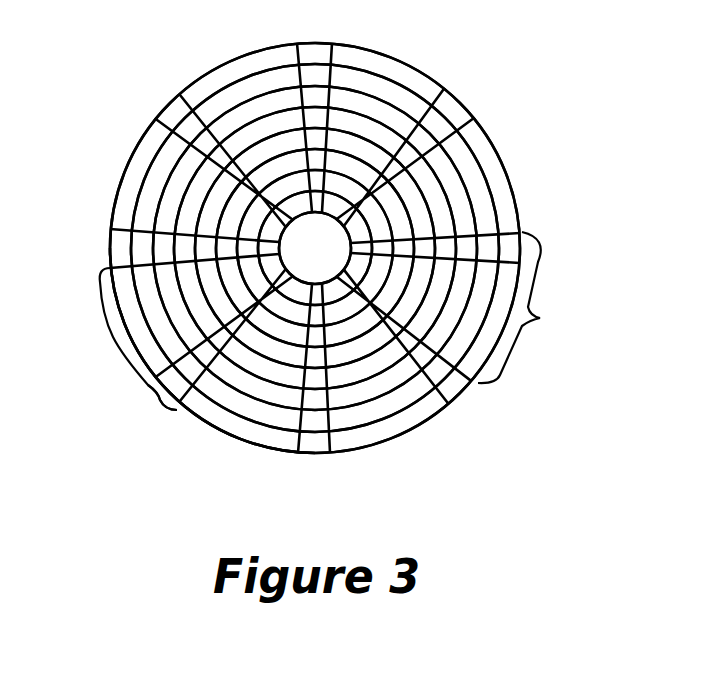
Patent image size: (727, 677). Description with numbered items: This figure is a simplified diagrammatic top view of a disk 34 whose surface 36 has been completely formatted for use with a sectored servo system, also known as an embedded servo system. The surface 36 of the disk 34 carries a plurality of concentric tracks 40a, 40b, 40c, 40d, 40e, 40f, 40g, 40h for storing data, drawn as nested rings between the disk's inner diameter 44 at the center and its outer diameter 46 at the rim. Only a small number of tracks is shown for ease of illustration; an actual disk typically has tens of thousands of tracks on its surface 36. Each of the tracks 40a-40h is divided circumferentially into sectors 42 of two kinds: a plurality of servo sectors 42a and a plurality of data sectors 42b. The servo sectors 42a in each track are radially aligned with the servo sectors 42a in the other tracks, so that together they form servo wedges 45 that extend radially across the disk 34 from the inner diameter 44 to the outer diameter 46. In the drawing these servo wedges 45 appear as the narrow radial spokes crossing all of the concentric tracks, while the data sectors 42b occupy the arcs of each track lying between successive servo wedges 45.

The disk 34 is at (218, 67).
The surface 36 is at (188, 162).
The track 40a is at (362, 58).
The track 40b is at (390, 88).
The track 40c is at (388, 118).
The track 40d is at (390, 137).
The track 40e is at (373, 342).
The track 40f is at (360, 328).
The track 40g is at (342, 313).
The track 40h is at (328, 298).
The sectors 42 is at (540, 318).
The servo sectors 42a is at (160, 408).
The data sectors 42b is at (108, 336).
The inner diameter 44 is at (284, 268).
The servo wedges 45 is at (186, 228).
The outer diameter 46 is at (215, 436).